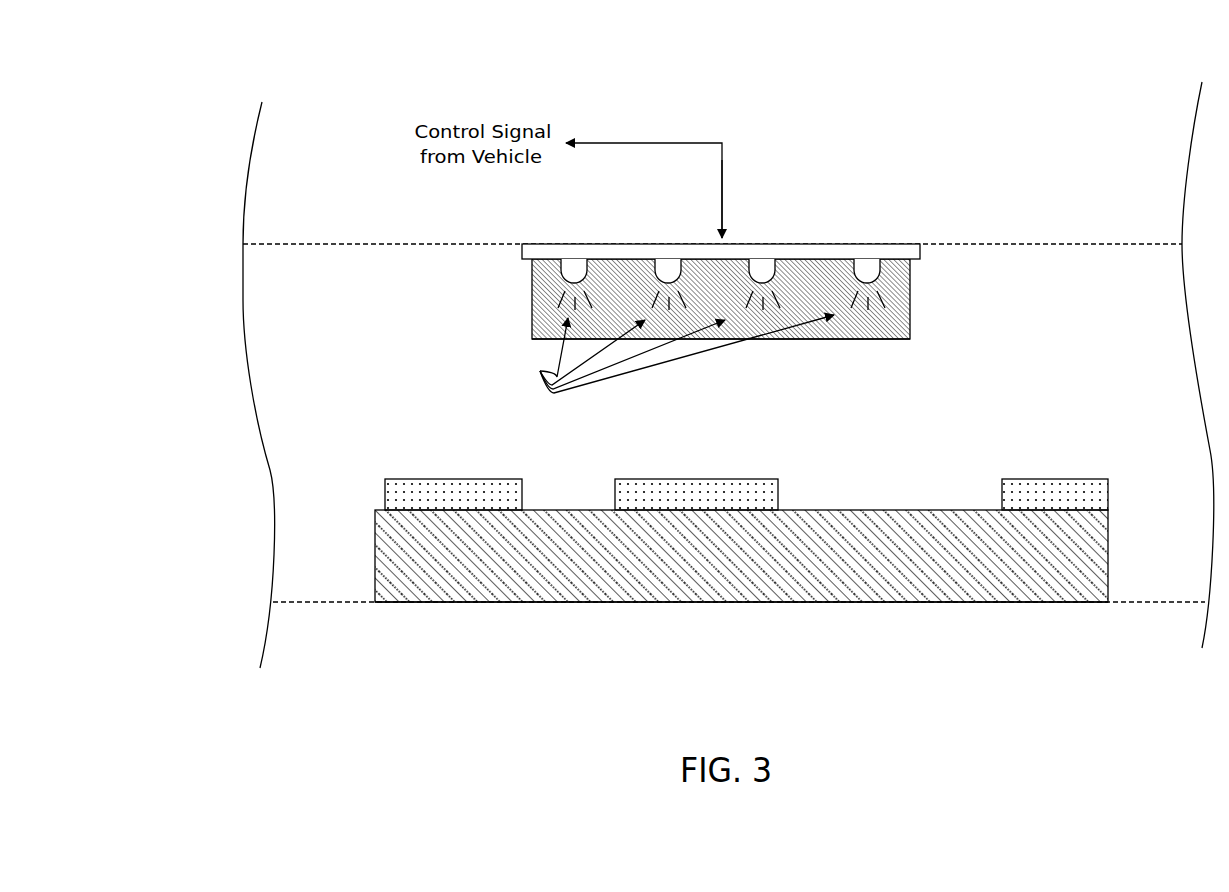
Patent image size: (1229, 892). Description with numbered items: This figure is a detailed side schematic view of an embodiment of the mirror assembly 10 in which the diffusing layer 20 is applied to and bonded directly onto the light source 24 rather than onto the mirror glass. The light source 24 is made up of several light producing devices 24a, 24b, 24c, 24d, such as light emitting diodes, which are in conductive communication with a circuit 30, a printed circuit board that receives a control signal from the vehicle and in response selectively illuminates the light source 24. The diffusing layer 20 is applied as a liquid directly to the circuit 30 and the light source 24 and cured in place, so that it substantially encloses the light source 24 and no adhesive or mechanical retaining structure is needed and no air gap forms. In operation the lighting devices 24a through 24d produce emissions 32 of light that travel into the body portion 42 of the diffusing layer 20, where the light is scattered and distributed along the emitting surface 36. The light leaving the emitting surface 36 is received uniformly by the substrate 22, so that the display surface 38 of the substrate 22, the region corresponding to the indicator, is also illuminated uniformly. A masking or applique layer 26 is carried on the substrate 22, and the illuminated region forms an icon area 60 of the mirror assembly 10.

The mirror assembly 10 is at (203, 105).
The diffusing layer 20 is at (537, 322).
The substrate 22 is at (437, 586).
The light source 24 is at (767, 215).
The light producing device 24a is at (573, 262).
The light producing device 24b is at (665, 262).
The light producing device 24c is at (760, 262).
The light producing device 24d is at (865, 262).
The applique layer 26 is at (405, 490).
The circuit 30 is at (522, 250).
The emissions 32 is at (540, 371).
The emitting surface 36 is at (797, 340).
The display surface 38 is at (560, 607).
The body portion 42 is at (548, 292).
The icon area 60 is at (665, 645).